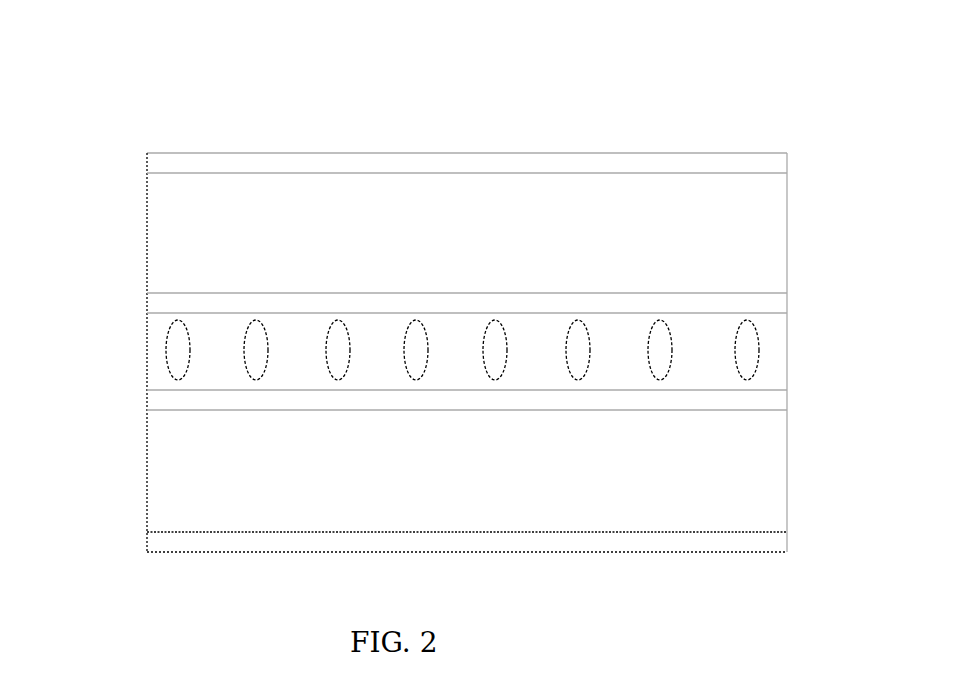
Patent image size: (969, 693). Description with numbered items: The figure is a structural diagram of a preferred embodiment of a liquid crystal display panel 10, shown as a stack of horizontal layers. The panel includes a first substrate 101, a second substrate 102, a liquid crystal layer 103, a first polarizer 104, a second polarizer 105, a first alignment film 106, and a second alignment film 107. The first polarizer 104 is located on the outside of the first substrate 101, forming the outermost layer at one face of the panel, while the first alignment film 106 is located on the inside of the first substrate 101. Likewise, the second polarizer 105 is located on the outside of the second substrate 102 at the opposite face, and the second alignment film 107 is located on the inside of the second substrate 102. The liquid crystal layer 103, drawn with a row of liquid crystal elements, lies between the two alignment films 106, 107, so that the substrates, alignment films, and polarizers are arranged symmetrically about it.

The liquid crystal display panel 10 is at (680, 85).
The first substrate 101 is at (147, 472).
The second substrate 102 is at (147, 235).
The liquid crystal layer 103 is at (147, 355).
The first polarizer 104 is at (147, 542).
The second polarizer 105 is at (147, 159).
The first alignment film 106 is at (147, 398).
The second alignment film 107 is at (147, 303).